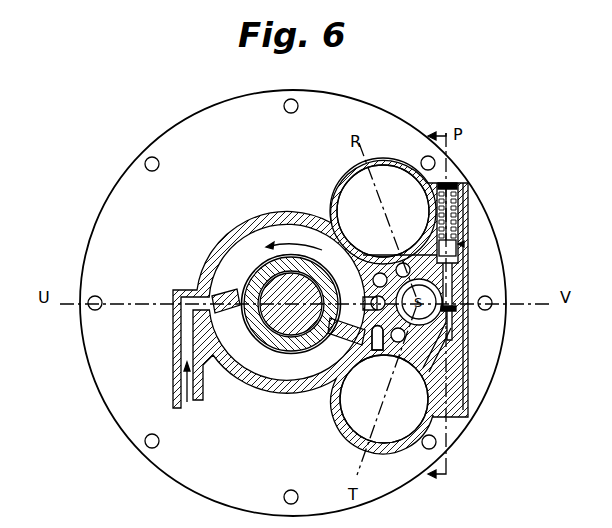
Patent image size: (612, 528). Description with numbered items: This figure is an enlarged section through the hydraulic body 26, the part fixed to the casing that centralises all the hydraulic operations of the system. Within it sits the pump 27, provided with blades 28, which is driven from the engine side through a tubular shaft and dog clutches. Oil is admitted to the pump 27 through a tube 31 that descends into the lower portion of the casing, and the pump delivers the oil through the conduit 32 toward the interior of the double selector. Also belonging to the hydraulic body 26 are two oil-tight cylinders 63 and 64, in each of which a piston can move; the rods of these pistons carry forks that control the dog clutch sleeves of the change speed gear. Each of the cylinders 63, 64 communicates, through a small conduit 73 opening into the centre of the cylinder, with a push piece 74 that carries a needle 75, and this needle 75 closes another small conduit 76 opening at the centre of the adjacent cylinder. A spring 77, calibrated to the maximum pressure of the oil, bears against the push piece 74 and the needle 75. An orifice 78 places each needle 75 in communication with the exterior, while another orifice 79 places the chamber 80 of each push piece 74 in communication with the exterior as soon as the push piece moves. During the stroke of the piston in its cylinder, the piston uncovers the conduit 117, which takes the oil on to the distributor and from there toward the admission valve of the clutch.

The hydraulic body 26 is at (120, 186).
The pump 27 is at (260, 360).
The blades 28 is at (211, 283).
The tube 31 is at (174, 383).
The conduit 32 is at (376, 256).
The oil-tight cylinder 63 is at (386, 428).
The oil-tight cylinder 64 is at (383, 173).
The small conduit 73 is at (406, 260).
The push piece 74 is at (449, 243).
The needle 75 is at (457, 310).
The small conduit 76 is at (438, 352).
The spring 77 is at (457, 203).
The orifice 78 is at (482, 294).
The orifice 79 is at (466, 246).
The chamber 80 is at (466, 262).
The conduit 117 is at (378, 349).